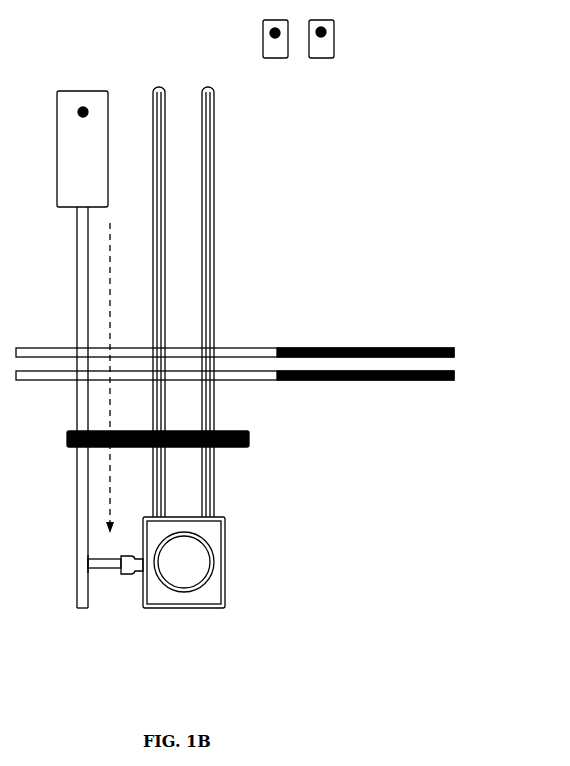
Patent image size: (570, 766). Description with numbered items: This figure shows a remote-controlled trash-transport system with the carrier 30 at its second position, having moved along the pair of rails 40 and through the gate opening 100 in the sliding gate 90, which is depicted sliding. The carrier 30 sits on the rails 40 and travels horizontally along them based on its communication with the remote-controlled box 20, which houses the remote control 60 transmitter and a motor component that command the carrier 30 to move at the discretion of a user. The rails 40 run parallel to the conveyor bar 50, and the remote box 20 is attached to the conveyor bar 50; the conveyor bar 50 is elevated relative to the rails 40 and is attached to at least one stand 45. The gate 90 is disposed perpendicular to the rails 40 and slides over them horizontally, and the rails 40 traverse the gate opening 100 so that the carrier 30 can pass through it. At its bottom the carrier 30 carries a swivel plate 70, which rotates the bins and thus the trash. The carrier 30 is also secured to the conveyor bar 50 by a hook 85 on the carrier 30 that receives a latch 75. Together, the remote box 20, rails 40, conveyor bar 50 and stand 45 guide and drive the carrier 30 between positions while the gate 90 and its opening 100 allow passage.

The remote-controlled box 20 is at (84, 88).
The carrier 30 is at (232, 590).
The pair of rails 40 is at (218, 185).
The stand for rails 45 is at (251, 437).
The conveyor bar 50 is at (75, 258).
The remote control 60 is at (330, 65).
The swivel plate 70 is at (216, 556).
The latch 75 is at (107, 573).
The hook 85 is at (122, 552).
The gate 90 is at (380, 345).
The gate opening 100 is at (458, 365).